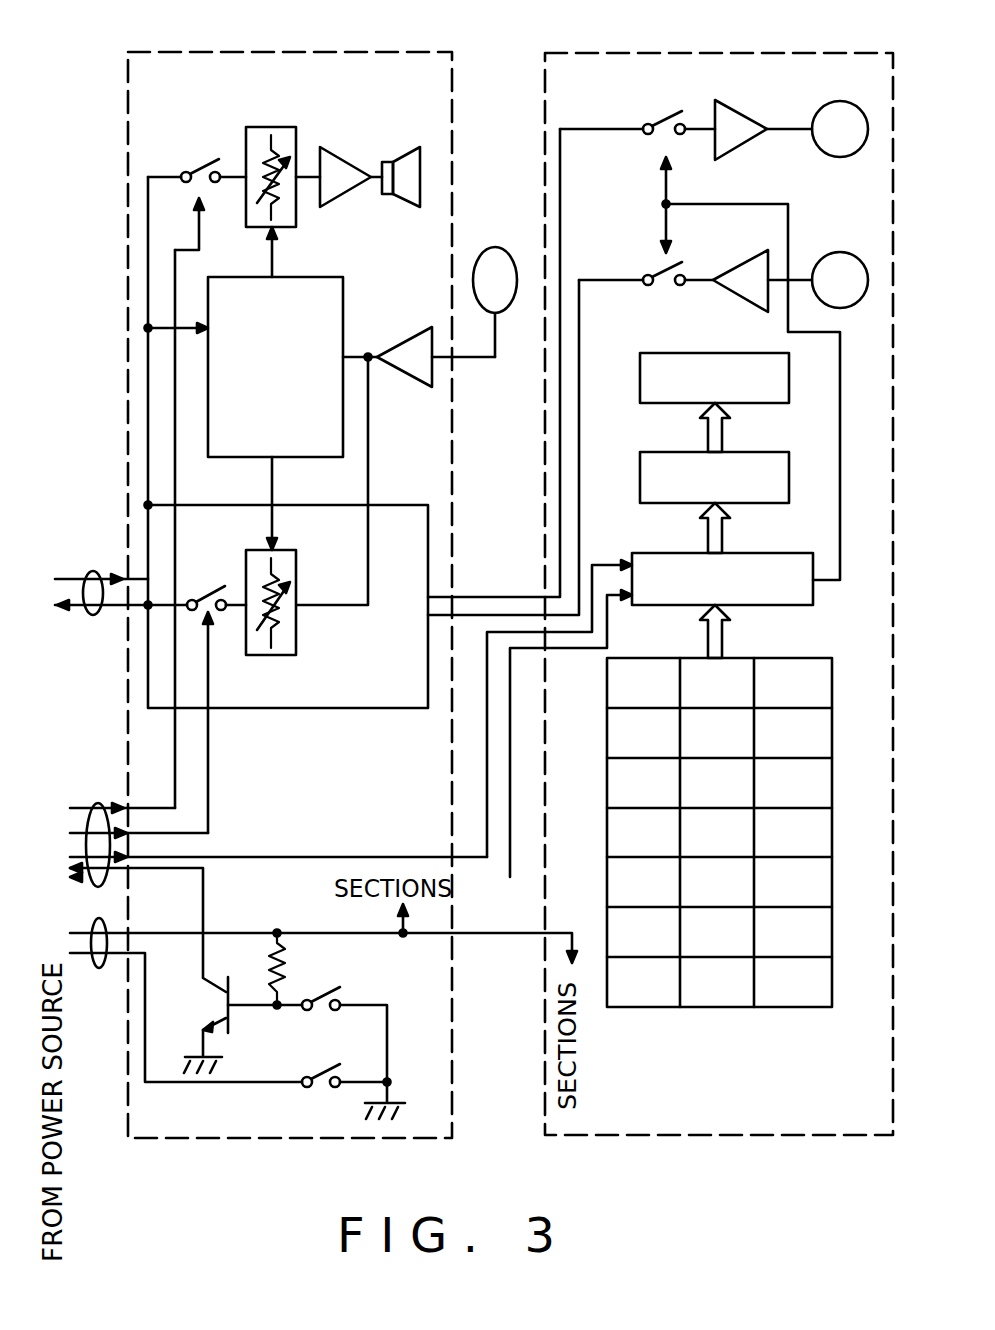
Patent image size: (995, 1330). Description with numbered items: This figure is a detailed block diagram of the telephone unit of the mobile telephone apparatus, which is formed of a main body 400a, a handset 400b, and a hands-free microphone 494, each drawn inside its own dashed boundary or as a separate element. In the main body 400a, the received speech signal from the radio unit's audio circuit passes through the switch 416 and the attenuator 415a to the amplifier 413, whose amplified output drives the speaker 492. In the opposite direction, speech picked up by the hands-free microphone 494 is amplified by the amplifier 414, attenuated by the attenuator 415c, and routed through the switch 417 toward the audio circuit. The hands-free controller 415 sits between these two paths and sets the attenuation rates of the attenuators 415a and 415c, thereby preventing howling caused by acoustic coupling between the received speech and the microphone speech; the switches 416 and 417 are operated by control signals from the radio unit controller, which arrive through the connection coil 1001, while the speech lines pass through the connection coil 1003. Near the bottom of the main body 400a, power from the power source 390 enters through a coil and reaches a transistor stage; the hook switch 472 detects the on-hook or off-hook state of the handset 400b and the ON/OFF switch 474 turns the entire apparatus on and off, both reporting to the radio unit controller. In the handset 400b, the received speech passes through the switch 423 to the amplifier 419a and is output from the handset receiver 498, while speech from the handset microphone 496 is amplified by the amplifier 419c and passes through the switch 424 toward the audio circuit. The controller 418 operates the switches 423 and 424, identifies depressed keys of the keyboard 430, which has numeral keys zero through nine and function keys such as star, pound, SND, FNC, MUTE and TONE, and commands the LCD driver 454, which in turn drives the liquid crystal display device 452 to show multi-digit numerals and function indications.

The main body 400a is at (385, 52).
The handset 400b is at (809, 52).
The switch 416 is at (203, 167).
The attenuator 415a is at (286, 128).
The amplifier 413 is at (363, 162).
The speaker 492 is at (412, 205).
The hands-free controller 415 is at (315, 279).
The amplifier 414 is at (400, 346).
The hands-free microphone 494 is at (498, 248).
The switch 417 is at (206, 589).
The attenuator 415c is at (284, 563).
The audio connection coil 1003 is at (94, 615).
The control connection coil 1001 is at (97, 807).
The power source 390 is at (97, 968).
The switch 423 is at (655, 124).
The amplifier 419a is at (740, 118).
The handset receiver 498 is at (849, 103).
The switch 424 is at (642, 279).
The amplifier 419c is at (750, 249).
The handset microphone 496 is at (852, 265).
The liquid crystal display device 452 is at (657, 353).
The LCD driver 454 is at (653, 462).
The controller 418 is at (648, 562).
The keyboard 430 is at (802, 658).
The hook switch 472 is at (326, 994).
The ON/OFF switch 474 is at (324, 1071).